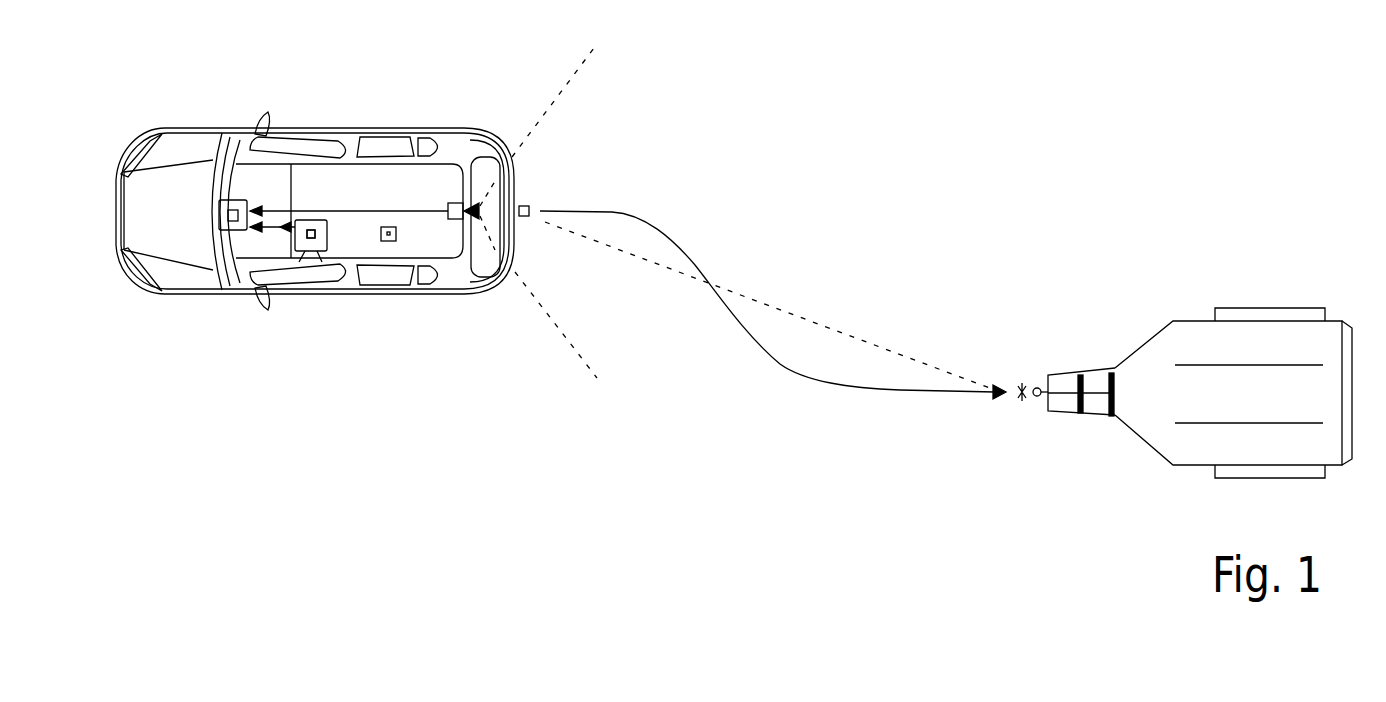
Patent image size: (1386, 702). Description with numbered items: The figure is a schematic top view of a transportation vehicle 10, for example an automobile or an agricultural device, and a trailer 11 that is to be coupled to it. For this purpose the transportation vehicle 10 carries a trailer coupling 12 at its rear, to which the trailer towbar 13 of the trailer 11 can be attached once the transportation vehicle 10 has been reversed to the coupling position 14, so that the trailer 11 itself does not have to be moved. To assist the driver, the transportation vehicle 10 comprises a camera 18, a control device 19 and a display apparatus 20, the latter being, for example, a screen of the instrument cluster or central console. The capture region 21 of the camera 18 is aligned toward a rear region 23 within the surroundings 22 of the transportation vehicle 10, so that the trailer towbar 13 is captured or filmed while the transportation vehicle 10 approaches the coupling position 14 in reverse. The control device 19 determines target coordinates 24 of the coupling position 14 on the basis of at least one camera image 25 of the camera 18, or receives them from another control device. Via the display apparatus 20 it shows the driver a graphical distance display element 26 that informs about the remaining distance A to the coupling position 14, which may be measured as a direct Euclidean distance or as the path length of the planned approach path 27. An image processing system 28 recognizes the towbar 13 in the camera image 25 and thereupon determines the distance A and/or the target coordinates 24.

The transportation vehicle 10 is at (352, 127).
The trailer 11 is at (1150, 347).
The trailer coupling 12 is at (528, 207).
The trailer towbar 13 is at (1050, 372).
The coupling position 14 is at (1020, 400).
The camera 18 is at (458, 203).
The control device 19 is at (270, 110).
The display apparatus 20 is at (318, 262).
The capture region 21 is at (533, 127).
The surroundings 22 is at (670, 179).
The rear region 23 is at (604, 287).
The target coordinates 24 is at (987, 340).
The camera image 25 is at (397, 234).
The graphical distance display element 26 is at (307, 264).
The approach path 27 is at (822, 378).
The image processing system 28 is at (223, 198).
The remaining distance A is at (777, 302).